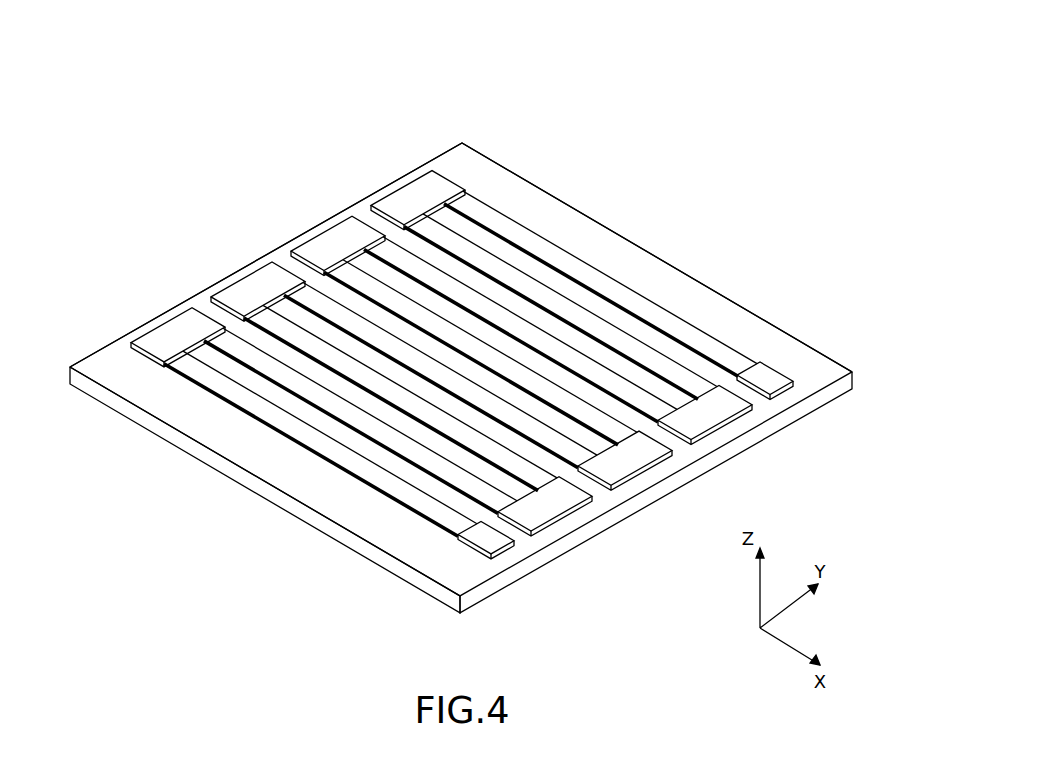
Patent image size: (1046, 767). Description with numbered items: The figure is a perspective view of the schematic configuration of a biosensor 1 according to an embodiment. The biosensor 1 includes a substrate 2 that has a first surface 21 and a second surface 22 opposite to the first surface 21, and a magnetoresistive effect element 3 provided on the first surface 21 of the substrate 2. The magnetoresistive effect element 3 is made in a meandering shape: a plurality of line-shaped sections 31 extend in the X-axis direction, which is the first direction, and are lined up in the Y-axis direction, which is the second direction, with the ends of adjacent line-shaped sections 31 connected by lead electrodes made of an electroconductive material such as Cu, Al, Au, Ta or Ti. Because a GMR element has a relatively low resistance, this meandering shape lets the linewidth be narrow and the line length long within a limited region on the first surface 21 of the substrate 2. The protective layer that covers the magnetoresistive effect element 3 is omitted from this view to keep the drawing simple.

The biosensor 1 is at (555, 117).
The substrate 2 is at (808, 342).
The first surface 21 is at (515, 185).
The second surface 22 is at (608, 518).
The magnetoresistive effect element 3 is at (495, 270).
The line-shaped sections 31 is at (480, 352).